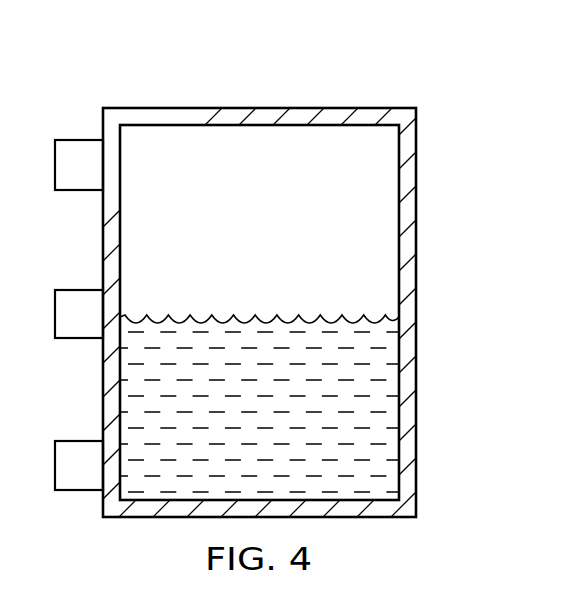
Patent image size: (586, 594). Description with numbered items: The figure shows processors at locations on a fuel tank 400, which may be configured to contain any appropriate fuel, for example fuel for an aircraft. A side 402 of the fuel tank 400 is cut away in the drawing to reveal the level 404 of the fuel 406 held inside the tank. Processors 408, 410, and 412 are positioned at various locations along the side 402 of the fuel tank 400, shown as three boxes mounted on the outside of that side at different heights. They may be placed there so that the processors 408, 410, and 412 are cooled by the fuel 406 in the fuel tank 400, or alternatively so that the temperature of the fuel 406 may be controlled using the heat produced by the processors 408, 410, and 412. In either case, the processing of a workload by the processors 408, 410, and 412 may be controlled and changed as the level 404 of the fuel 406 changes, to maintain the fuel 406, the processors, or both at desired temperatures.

The fuel tank 400 is at (293, 321).
The side 402 is at (103, 222).
The level 404 is at (178, 317).
The fuel 406 is at (392, 403).
The processor 408 is at (78, 491).
The processor 410 is at (80, 290).
The processor 412 is at (78, 140).